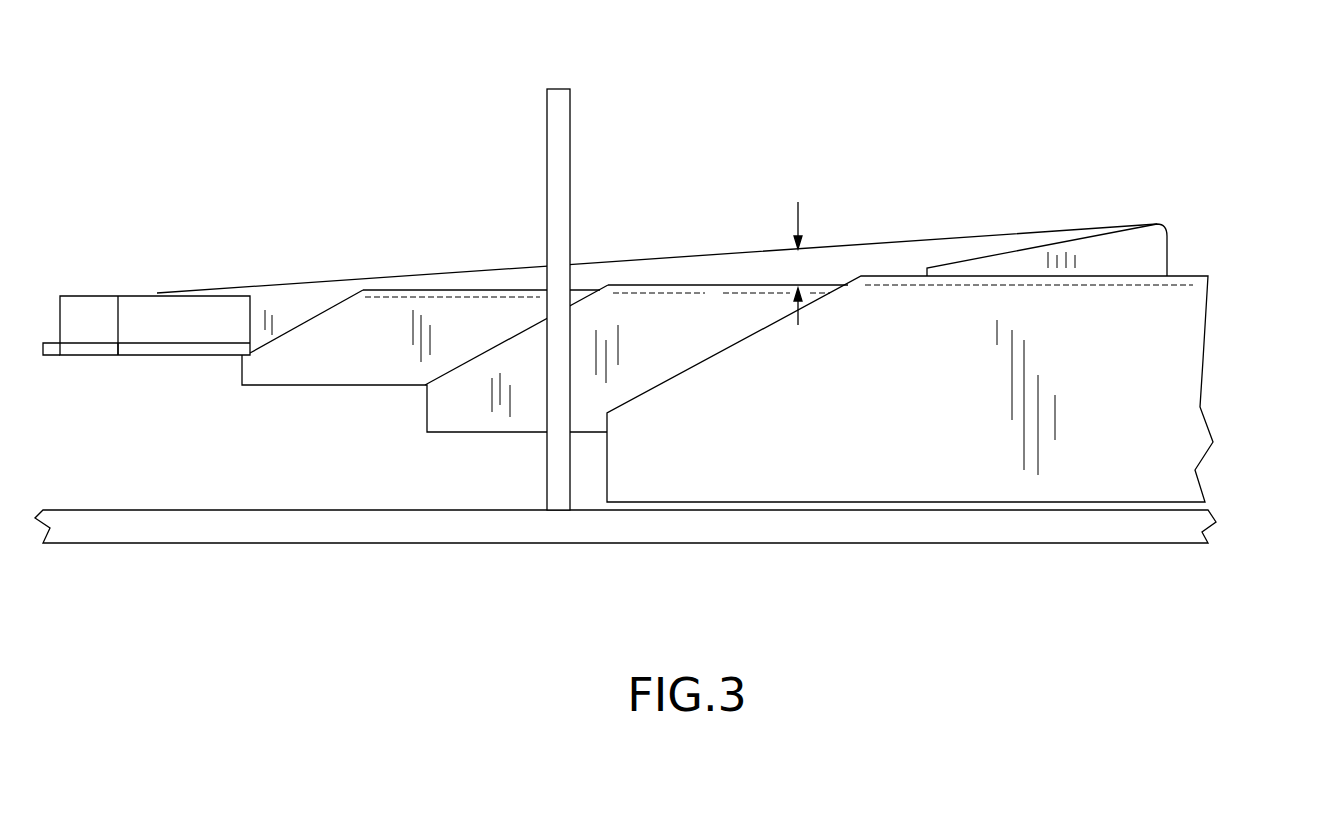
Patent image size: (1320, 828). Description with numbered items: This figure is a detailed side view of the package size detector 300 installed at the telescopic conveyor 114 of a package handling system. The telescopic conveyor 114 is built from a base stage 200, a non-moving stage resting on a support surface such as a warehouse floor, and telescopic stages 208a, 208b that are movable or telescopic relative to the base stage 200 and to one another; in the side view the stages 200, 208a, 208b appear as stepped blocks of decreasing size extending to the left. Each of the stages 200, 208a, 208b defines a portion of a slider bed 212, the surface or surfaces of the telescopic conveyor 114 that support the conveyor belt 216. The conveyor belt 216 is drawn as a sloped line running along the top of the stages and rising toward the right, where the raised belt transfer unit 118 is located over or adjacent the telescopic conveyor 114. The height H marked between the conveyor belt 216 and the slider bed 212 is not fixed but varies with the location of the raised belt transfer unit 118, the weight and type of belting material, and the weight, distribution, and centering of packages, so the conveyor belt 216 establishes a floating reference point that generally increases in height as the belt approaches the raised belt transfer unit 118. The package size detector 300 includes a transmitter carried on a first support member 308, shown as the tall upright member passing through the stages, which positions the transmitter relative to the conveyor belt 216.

The telescopic conveyor 114 is at (988, 580).
The raised belt transfer unit 118 is at (1190, 233).
The base stage 200 is at (828, 470).
The telescopic stage 208a is at (375, 358).
The telescopic stage 208b is at (170, 356).
The slider bed 212 is at (147, 307).
The conveyor belt 216 is at (423, 283).
The package size detector 300 is at (676, 324).
The first support member 308 is at (548, 162).